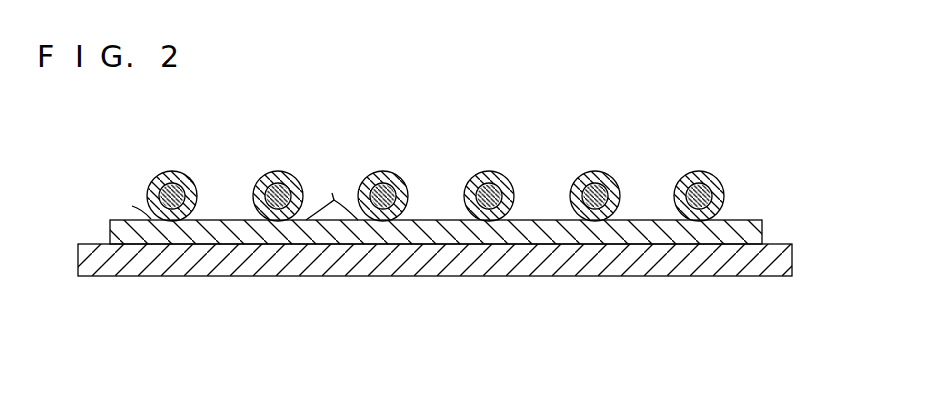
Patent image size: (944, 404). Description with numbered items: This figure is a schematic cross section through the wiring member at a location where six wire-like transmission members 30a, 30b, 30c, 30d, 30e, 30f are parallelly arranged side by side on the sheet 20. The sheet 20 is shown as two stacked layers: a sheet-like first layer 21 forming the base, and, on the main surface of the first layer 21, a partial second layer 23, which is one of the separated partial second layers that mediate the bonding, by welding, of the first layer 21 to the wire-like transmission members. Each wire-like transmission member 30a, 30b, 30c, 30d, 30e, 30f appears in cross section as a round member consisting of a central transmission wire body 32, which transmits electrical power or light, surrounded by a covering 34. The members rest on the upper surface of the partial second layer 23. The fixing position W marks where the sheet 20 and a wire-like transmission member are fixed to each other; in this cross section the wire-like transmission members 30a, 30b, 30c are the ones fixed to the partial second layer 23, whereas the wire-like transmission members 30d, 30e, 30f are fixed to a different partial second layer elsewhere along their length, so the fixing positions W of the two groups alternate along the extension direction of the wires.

The sheet 20 is at (435, 239).
The first layer 21 is at (723, 269).
The partial second layer 23 is at (745, 219).
The wire-like transmission member 30a is at (197, 170).
The wire-like transmission member 30b is at (280, 171).
The wire-like transmission member 30c is at (386, 171).
The wire-like transmission member 30d is at (488, 171).
The wire-like transmission member 30e is at (596, 171).
The wire-like transmission member 30f is at (699, 171).
The transmission wire body 32 is at (186, 188).
The covering 34 is at (199, 193).
The fixing position W is at (237, 194).